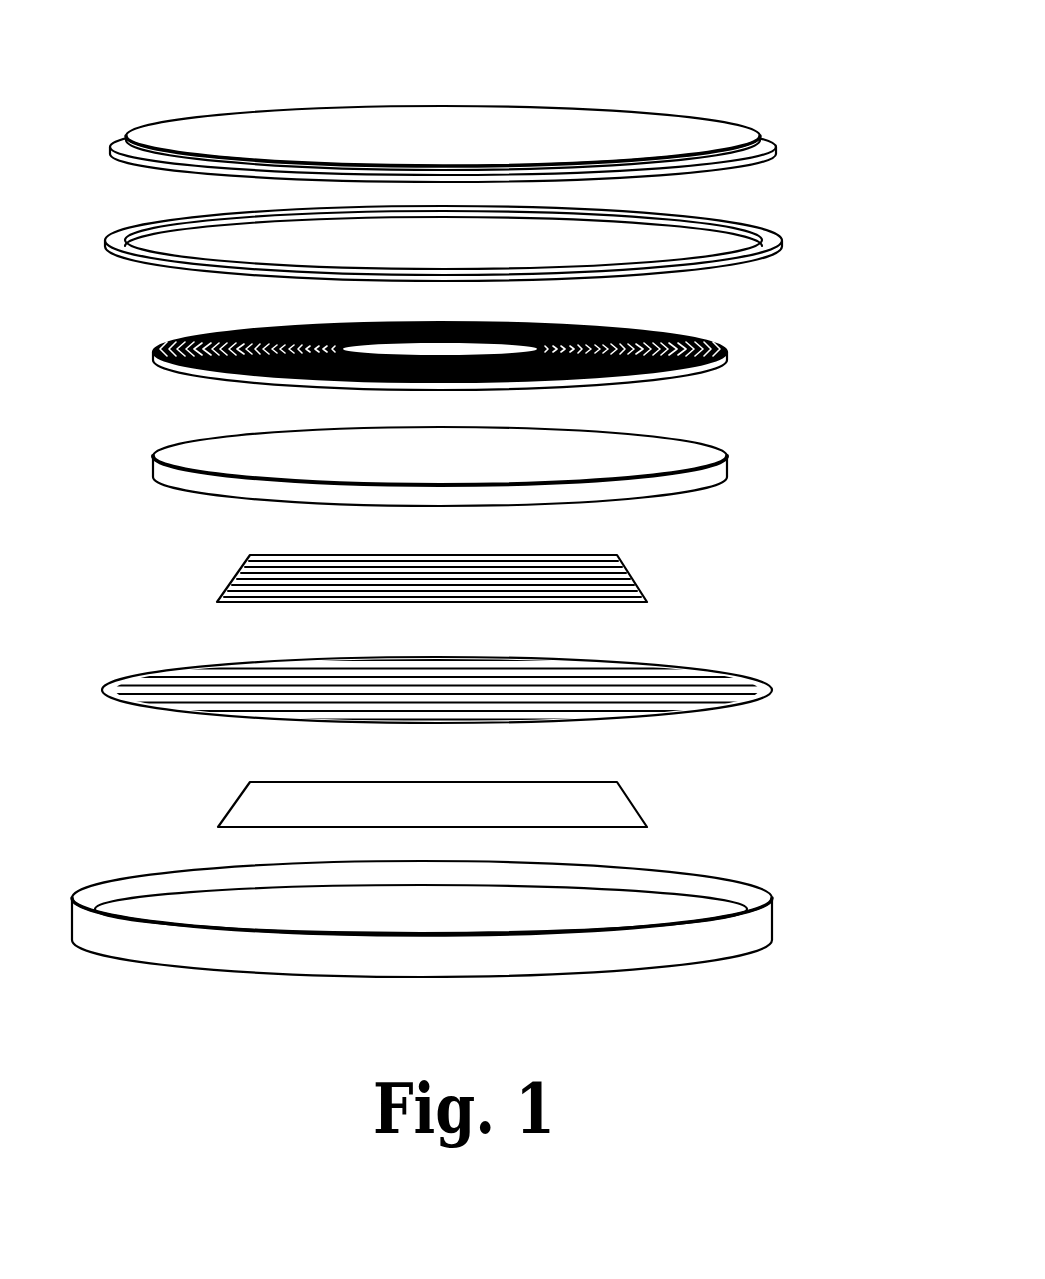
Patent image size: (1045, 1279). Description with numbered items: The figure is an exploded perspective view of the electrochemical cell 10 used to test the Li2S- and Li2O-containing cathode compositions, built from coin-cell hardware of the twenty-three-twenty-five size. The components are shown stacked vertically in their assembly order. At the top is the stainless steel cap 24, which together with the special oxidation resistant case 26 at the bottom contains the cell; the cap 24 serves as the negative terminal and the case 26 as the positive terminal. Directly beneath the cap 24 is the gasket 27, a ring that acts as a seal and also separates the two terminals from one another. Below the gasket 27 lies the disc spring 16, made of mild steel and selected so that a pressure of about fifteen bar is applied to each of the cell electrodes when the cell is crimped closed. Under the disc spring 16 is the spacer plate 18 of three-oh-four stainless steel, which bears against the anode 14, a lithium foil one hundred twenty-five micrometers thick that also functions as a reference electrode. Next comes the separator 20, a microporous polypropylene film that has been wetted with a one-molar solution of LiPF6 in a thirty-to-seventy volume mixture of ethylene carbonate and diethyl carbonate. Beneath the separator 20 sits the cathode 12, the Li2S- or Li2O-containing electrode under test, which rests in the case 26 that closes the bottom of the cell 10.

The electrochemical cell 10 is at (645, 78).
The stainless steel cap 24 is at (743, 137).
The gasket 27 is at (770, 240).
The disc spring 16 is at (703, 343).
The spacer plate 18 is at (687, 458).
The anode 14 is at (603, 578).
The separator 20 is at (720, 688).
The cathode 12 is at (605, 807).
The oxidation resistant case 26 is at (752, 927).